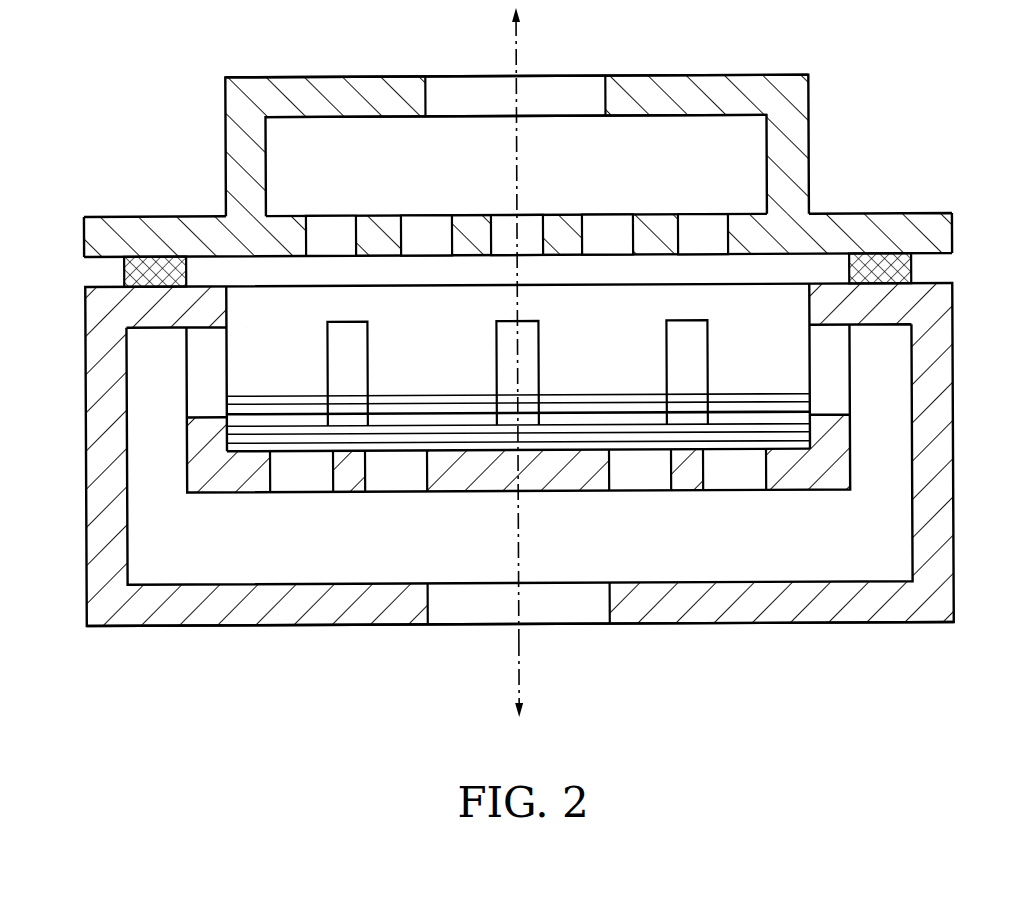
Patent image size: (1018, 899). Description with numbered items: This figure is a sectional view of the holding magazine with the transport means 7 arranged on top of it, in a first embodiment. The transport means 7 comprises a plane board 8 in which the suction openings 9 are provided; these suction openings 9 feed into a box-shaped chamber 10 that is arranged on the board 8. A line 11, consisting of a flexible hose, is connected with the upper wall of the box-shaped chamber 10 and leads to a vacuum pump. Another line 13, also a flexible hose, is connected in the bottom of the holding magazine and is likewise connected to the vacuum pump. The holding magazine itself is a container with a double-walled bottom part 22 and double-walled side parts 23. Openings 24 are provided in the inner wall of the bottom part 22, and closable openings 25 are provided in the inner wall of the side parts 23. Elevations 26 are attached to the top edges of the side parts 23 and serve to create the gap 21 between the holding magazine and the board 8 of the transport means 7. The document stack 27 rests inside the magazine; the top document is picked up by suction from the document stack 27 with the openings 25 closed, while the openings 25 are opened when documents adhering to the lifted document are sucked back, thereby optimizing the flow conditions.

The transport means 7 is at (206, 92).
The plane board 8 is at (108, 220).
The suction openings 9 is at (421, 222).
The box-shaped chamber 10 is at (684, 87).
The line 11 is at (519, 58).
The line 13 is at (522, 655).
The gap 21 is at (125, 268).
The bottom part 22 is at (804, 564).
The side parts 23 is at (898, 423).
The openings 24 is at (660, 491).
The closable openings 25 is at (345, 360).
The elevations 26 is at (912, 263).
The document stack 27 is at (423, 408).